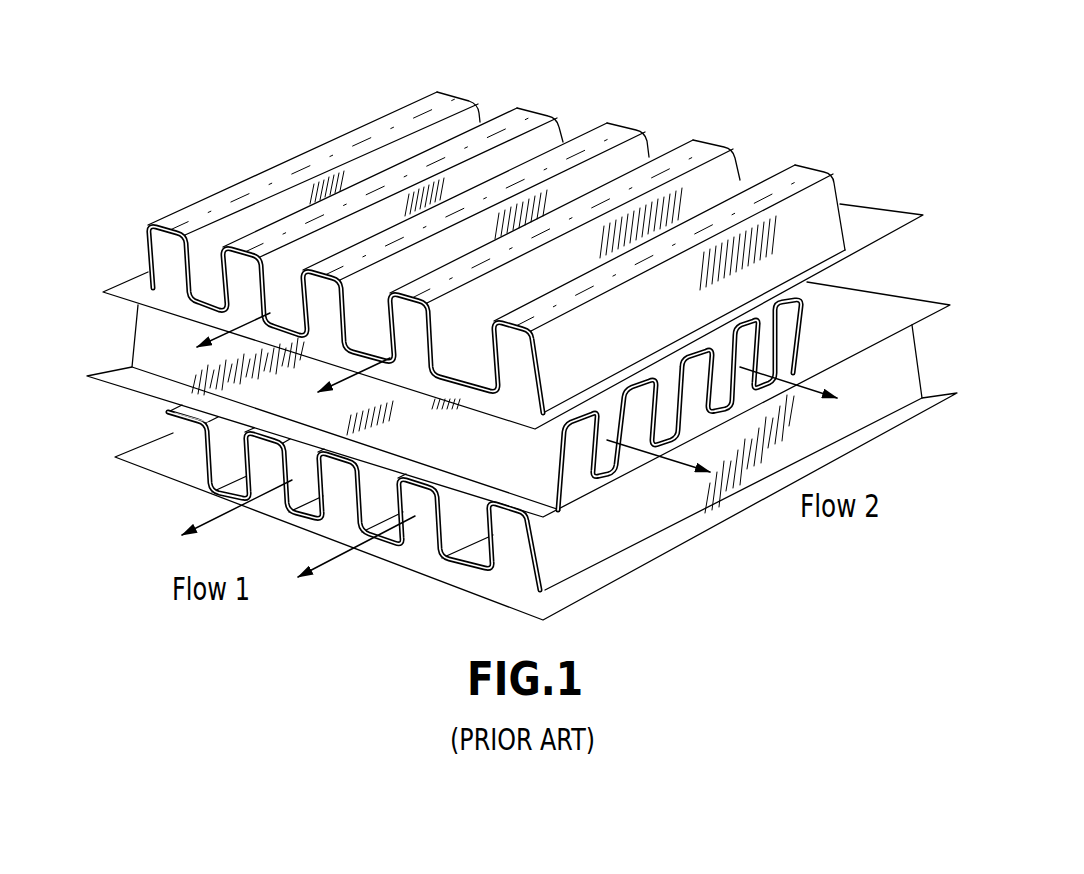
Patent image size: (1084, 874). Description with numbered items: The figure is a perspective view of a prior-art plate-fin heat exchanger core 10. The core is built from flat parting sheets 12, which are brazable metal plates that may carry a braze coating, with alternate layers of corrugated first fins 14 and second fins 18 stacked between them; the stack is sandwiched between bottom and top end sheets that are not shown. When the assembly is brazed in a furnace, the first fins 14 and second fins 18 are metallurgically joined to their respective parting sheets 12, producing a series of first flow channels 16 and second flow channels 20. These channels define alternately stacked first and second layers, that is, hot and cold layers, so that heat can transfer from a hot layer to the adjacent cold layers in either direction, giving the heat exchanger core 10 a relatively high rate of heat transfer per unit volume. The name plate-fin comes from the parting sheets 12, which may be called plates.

The heat exchanger core 10 is at (173, 140).
The parting sheets 12 is at (88, 377).
The first fins 14 is at (830, 207).
The first flow channels 16 is at (190, 447).
The second fins 18 is at (565, 468).
The second flow channels 20 is at (574, 446).